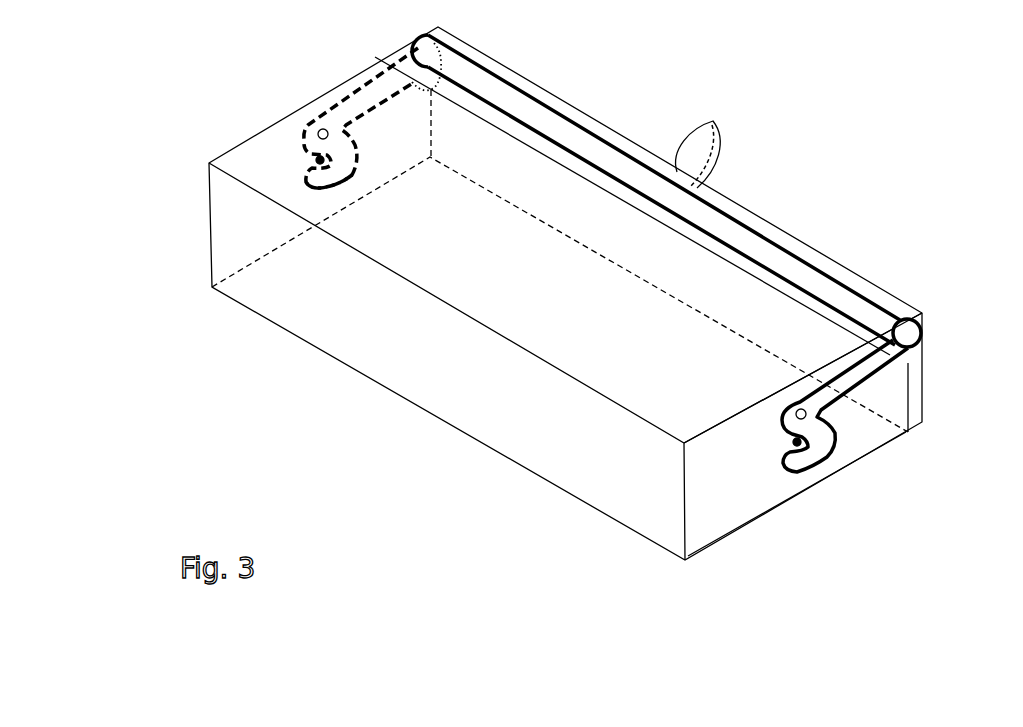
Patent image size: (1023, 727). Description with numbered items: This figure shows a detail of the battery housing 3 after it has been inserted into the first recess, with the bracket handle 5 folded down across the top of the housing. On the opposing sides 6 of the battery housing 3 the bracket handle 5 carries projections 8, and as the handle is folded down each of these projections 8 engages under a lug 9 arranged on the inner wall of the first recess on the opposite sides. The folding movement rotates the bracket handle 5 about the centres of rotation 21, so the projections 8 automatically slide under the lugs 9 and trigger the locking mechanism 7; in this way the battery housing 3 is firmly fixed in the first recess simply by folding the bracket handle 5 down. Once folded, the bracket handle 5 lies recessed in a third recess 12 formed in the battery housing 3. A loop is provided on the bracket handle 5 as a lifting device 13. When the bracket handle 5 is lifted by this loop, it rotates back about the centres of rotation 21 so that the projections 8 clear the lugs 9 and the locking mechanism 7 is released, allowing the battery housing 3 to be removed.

The battery housing 3 is at (408, 378).
The bracket handle 5 is at (762, 247).
The opposing sides 6 is at (722, 485).
The locking mechanism 7 is at (849, 491).
The projections 8 is at (797, 460).
The lug 9 is at (810, 447).
The third recess 12 is at (912, 358).
The lifting device 13 is at (707, 117).
The centres of rotation 21 is at (808, 415).